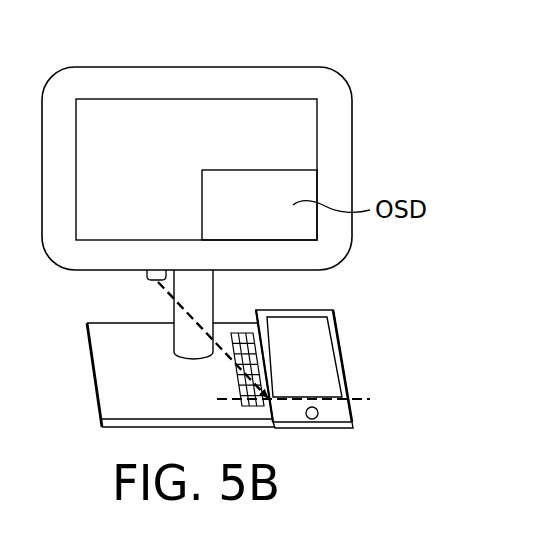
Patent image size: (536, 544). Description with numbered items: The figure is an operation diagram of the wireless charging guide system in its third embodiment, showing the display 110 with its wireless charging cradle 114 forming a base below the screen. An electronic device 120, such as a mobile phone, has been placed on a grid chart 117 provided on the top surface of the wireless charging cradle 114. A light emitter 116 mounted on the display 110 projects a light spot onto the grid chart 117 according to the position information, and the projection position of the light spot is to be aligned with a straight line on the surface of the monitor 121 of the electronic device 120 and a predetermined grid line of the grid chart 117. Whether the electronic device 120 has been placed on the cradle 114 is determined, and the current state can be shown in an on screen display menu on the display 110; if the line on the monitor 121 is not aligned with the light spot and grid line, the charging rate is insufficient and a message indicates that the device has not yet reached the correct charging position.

The display 110 is at (198, 67).
The wireless charging cradle 114 is at (113, 372).
The light emitter 116 is at (153, 279).
The grid chart 117 is at (234, 323).
The electronic device 120 is at (343, 368).
The monitor 121 is at (330, 336).